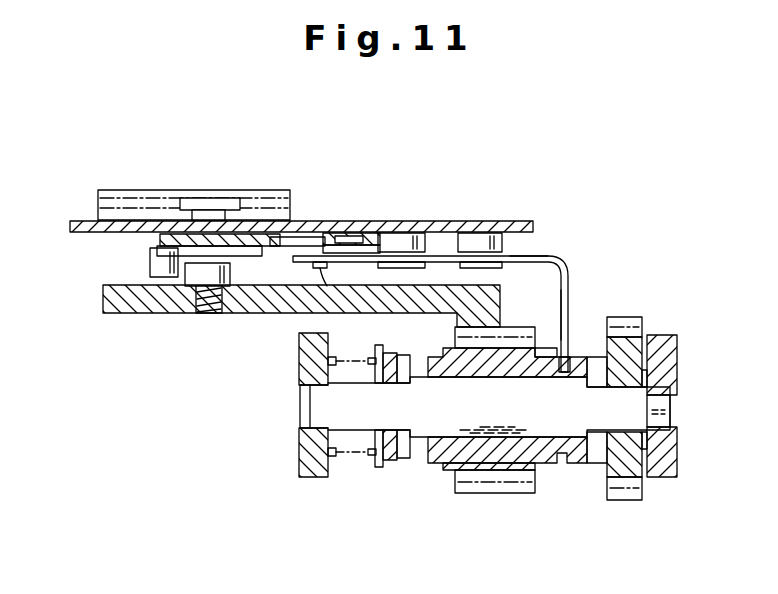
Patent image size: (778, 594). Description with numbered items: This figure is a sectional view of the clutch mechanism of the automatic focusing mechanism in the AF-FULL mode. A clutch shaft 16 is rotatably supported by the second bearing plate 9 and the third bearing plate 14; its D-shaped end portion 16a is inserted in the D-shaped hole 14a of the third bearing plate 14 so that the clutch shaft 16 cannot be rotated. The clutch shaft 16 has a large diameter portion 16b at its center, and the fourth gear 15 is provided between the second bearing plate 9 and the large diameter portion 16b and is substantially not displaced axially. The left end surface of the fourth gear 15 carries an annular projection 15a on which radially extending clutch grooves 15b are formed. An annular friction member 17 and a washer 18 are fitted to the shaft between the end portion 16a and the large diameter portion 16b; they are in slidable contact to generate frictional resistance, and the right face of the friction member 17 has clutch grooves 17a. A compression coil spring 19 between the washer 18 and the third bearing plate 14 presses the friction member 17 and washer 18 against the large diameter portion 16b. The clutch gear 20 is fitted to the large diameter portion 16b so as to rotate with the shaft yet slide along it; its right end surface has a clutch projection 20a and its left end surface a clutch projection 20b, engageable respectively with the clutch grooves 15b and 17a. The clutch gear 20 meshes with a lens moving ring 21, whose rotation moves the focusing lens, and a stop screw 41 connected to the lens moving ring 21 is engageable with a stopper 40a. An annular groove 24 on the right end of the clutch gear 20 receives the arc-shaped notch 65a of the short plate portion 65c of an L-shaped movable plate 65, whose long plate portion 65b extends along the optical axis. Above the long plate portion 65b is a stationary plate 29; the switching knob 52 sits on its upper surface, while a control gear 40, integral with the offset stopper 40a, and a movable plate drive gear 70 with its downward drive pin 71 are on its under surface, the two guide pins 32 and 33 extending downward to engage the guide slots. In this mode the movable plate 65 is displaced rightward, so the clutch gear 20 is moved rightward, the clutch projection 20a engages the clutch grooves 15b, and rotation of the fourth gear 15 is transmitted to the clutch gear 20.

The second bearing plate 9 is at (672, 452).
The third bearing plate 14 is at (305, 440).
The hole 14a is at (302, 417).
The fourth gear 15 is at (637, 470).
The annular projection 15a is at (600, 458).
The clutch grooves 15b is at (647, 376).
The clutch shaft 16 is at (645, 407).
The end portion 16a is at (308, 398).
The large diameter portion 16b is at (560, 462).
The friction member 17 is at (405, 462).
The clutch grooves 17a is at (417, 462).
The washer 18 is at (380, 465).
The compression coil spring 19 is at (340, 462).
The clutch gear 20 is at (564, 421).
The clutch projection 20a is at (608, 318).
The clutch projection 20b is at (437, 465).
The lens moving ring 21 is at (148, 313).
The annular groove 24 is at (553, 352).
The stationary plate 29 is at (440, 224).
The guide pin 32 is at (408, 243).
The guide pin 33 is at (483, 242).
The control gear 40 is at (241, 236).
The stopper 40a is at (150, 265).
The stop screw 41 is at (233, 280).
The switching knob 52 is at (107, 213).
The movable plate 65 is at (567, 255).
The arc-shaped notch 65a is at (590, 362).
The long plate portion 65b is at (524, 243).
The short plate portion 65c is at (571, 283).
The movable plate drive gear 70 is at (322, 240).
The drive pin 71 is at (322, 272).